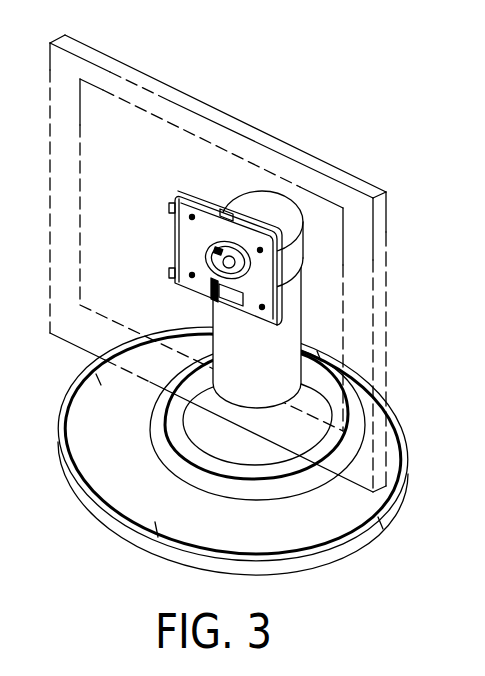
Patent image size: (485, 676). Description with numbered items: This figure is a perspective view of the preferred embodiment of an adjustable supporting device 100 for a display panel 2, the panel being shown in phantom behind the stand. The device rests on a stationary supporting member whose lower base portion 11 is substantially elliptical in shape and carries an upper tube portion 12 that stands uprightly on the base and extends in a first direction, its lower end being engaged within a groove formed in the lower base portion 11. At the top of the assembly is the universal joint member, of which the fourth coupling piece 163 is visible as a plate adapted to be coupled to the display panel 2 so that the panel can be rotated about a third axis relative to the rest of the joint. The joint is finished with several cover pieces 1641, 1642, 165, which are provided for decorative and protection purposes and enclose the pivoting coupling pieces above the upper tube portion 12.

The display panel 2 is at (165, 90).
The adjustable supporting device 100 is at (233, 357).
The lower base portion 11 is at (322, 526).
The upper tube portion 12 is at (292, 340).
The fourth coupling piece 163 is at (195, 260).
The cover piece 1641 is at (203, 197).
The cover piece 1642 is at (225, 293).
The cover piece 165 is at (273, 203).